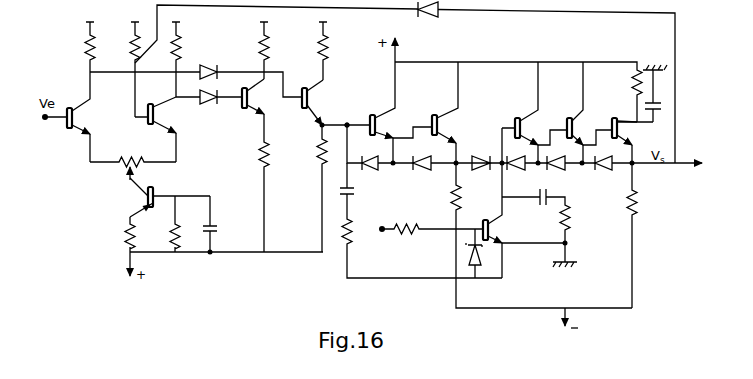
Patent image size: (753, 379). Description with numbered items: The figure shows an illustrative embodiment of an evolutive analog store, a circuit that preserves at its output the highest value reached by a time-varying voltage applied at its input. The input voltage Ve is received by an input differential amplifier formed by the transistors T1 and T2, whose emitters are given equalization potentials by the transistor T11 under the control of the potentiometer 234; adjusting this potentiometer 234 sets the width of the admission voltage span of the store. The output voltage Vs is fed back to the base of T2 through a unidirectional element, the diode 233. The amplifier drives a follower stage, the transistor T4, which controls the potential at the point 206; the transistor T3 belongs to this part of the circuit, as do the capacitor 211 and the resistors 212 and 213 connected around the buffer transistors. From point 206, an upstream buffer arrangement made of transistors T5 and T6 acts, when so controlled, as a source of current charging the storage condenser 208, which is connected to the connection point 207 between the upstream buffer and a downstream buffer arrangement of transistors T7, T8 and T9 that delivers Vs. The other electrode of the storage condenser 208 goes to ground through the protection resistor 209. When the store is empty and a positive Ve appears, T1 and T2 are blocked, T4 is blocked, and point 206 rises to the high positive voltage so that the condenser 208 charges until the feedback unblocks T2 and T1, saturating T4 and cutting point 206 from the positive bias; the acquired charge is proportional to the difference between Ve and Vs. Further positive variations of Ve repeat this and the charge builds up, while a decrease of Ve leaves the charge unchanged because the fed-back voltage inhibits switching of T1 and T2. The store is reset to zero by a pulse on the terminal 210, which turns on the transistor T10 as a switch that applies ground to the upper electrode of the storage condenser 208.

The input differential amplifier transistor T1 is at (72, 117).
The input differential amplifier transistor T2 is at (156, 129).
The transistor T3 is at (257, 96).
The follower stage transistor T4 is at (316, 102).
The upstream buffer transistor T5 is at (401, 112).
The upstream buffer transistor T6 is at (448, 112).
The downstream buffer transistor T7 is at (534, 112).
The downstream buffer transistor T8 is at (586, 112).
The downstream buffer transistor T9 is at (624, 136).
The reset switch transistor T10 is at (474, 231).
The equalization transistor T11 is at (133, 197).
The point 206 is at (353, 119).
The connection point 207 is at (493, 170).
The storage condenser 208 is at (557, 192).
The protection resistor 209 is at (578, 223).
The reset terminal 210 is at (400, 220).
The capacitor 211 is at (362, 190).
The resistor 212 is at (359, 237).
The resistor 213 is at (452, 167).
The diode 233 is at (431, 19).
The potentiometer 234 is at (133, 161).